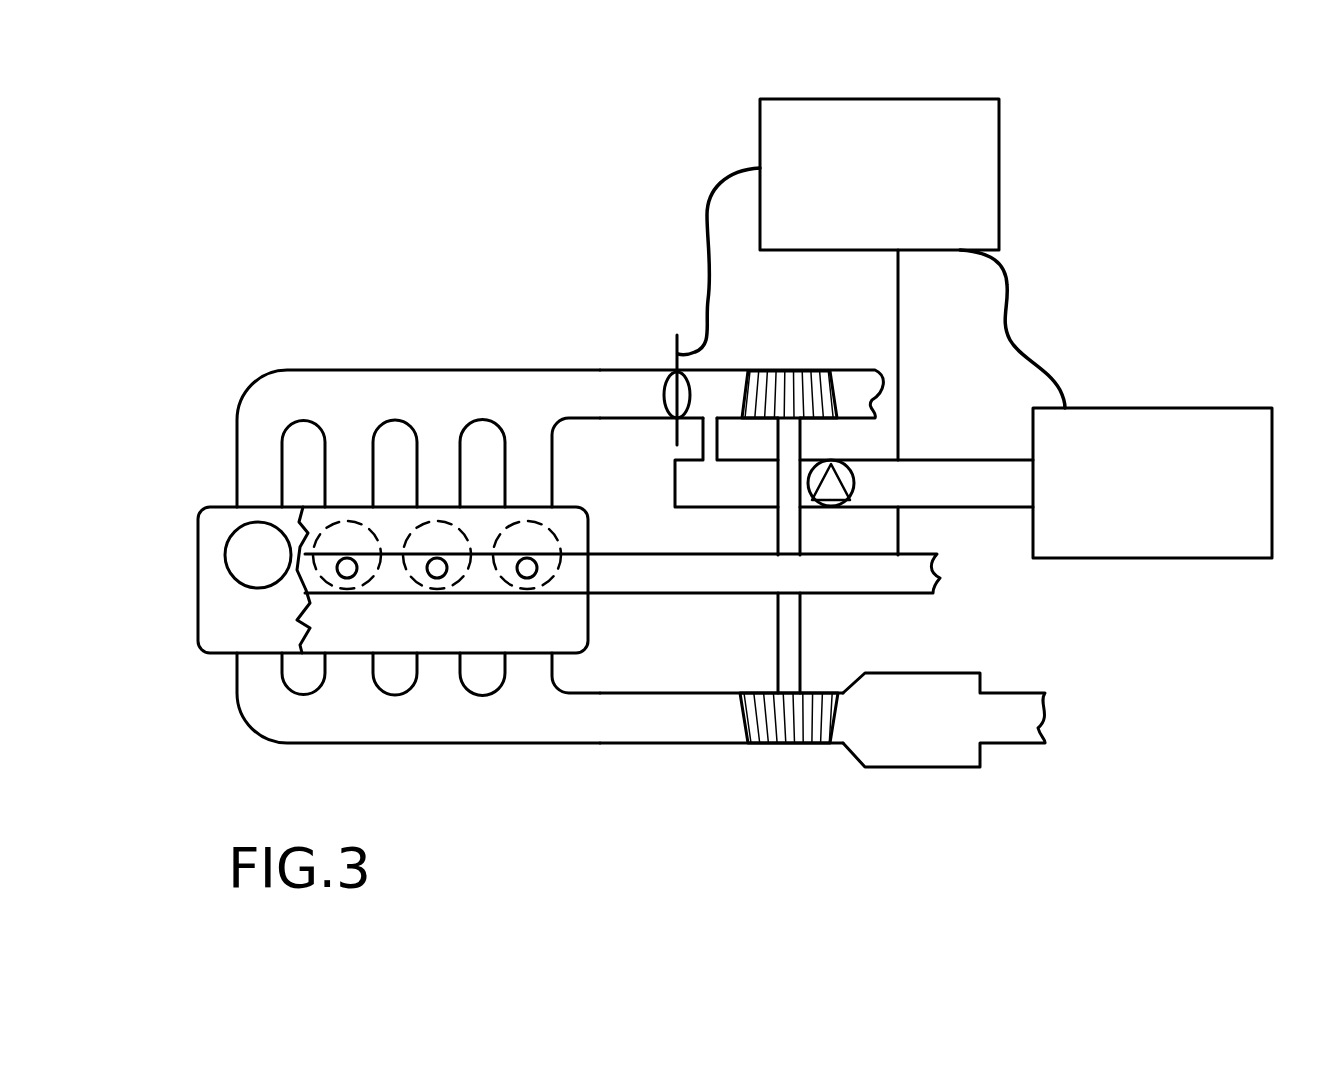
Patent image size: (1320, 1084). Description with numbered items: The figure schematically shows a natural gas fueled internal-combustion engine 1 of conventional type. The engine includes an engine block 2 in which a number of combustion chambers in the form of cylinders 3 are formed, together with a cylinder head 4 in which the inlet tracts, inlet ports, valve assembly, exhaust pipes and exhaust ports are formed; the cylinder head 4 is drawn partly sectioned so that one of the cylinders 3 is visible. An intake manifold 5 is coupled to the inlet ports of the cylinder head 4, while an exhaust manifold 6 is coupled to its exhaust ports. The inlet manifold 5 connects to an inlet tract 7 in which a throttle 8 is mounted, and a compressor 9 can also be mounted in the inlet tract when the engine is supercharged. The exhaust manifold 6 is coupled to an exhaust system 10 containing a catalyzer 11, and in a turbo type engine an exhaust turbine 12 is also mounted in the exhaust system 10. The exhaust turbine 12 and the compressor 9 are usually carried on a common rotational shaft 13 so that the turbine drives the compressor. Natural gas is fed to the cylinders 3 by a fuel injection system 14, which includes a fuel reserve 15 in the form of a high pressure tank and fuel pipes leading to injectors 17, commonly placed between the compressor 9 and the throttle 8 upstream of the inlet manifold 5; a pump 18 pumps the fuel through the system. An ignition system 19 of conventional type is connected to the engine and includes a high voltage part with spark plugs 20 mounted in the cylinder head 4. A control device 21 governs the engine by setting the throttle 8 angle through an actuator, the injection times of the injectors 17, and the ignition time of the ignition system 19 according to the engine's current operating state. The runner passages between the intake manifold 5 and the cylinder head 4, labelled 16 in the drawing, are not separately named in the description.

The internal combustion engine 1 is at (178, 501).
The engine block 2 is at (227, 628).
The cylinders 3 is at (240, 560).
The cylinder head 4 is at (558, 618).
The intake manifold 5 is at (440, 398).
The exhaust manifold 6 is at (585, 720).
The inlet tract 7 is at (535, 370).
The throttle 8 is at (673, 354).
The compressor 9 is at (793, 374).
The exhaust system 10 is at (675, 745).
The catalyzer 11 is at (920, 745).
The exhaust turbine 12 is at (772, 725).
The common rotational shaft 13 is at (783, 640).
The fuel injection system 14 is at (1185, 326).
The fuel reserve 15 is at (1180, 497).
The intake runners 16 is at (355, 467).
The injectors 17 is at (703, 445).
The pump 18 is at (825, 500).
The ignition system 19 is at (837, 583).
The spark plugs 20 is at (437, 578).
The control device 21 is at (910, 179).